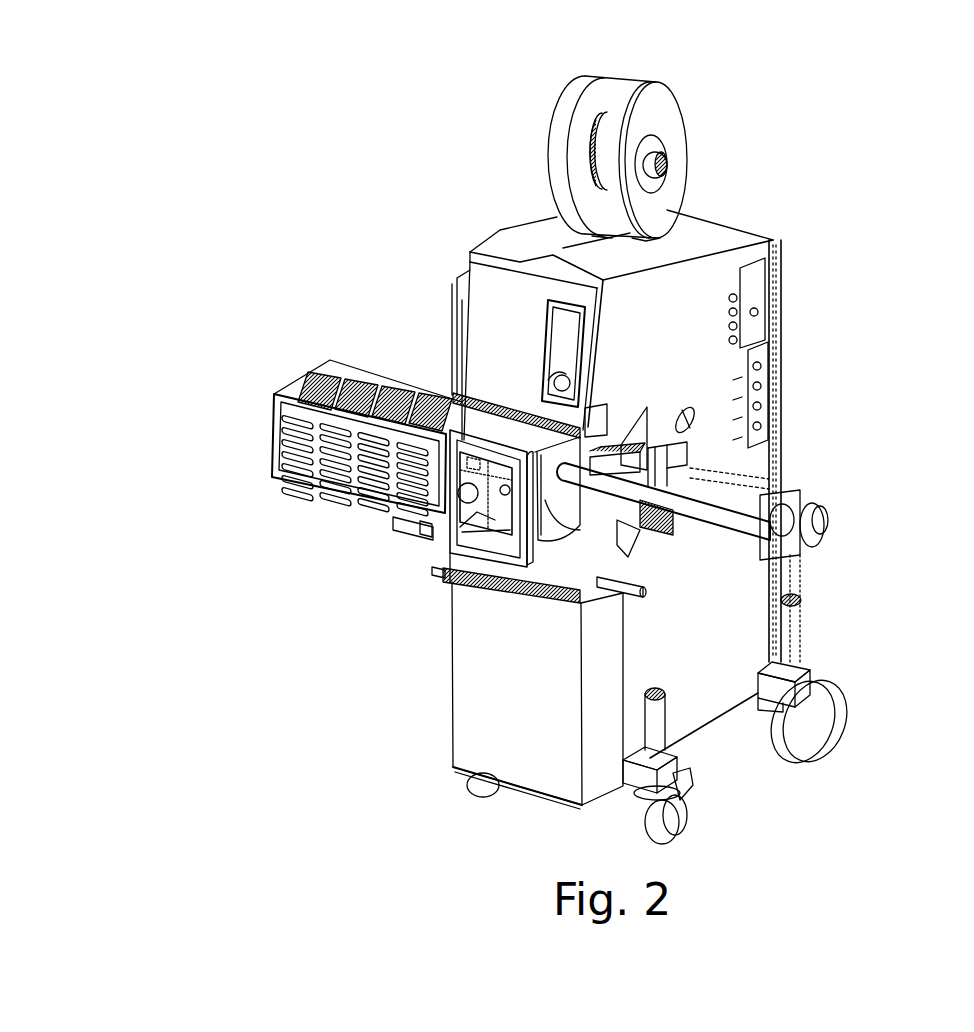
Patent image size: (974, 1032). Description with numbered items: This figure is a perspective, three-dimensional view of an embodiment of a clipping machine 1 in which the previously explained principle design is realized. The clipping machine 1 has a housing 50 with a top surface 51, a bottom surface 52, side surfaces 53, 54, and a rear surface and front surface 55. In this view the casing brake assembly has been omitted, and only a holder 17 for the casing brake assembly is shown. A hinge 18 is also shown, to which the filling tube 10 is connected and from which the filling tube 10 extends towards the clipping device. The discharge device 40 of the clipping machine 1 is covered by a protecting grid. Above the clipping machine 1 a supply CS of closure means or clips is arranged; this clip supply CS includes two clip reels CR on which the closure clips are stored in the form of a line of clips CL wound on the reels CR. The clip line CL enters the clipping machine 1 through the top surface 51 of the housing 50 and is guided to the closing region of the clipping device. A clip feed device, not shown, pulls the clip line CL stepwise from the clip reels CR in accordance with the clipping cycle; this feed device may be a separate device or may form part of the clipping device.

The clipping machine 1 is at (433, 182).
The clip reels CR is at (615, 90).
The clip supply CS is at (722, 106).
The clip line CL is at (617, 153).
The top surface 51 is at (713, 233).
The housing 50 is at (855, 260).
The side surface 54 is at (740, 263).
The side surface 53 is at (465, 257).
The front surface 55 is at (470, 337).
The discharge device 40 is at (258, 442).
The bottom surface 52 is at (713, 727).
The filling tube 10 is at (738, 513).
The holder 17 is at (577, 490).
The hinge 18 is at (803, 530).